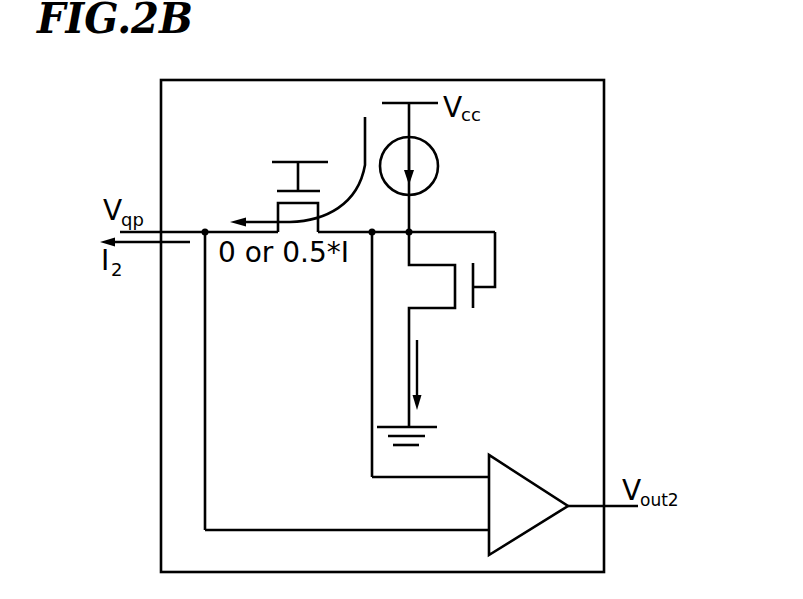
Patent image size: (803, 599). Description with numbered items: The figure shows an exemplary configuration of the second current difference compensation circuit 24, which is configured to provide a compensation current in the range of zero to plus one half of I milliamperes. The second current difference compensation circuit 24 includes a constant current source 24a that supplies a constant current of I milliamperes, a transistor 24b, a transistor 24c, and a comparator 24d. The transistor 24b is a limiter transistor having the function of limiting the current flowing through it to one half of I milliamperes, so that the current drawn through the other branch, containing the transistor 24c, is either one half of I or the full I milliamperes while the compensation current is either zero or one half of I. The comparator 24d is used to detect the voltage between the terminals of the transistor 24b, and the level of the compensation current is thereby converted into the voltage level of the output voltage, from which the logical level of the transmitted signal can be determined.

The second current difference compensation circuit 24 is at (260, 80).
The constant current source 24a is at (428, 193).
The limiter transistor 24b is at (272, 197).
The transistor 24c is at (460, 310).
The comparator 24d is at (547, 488).